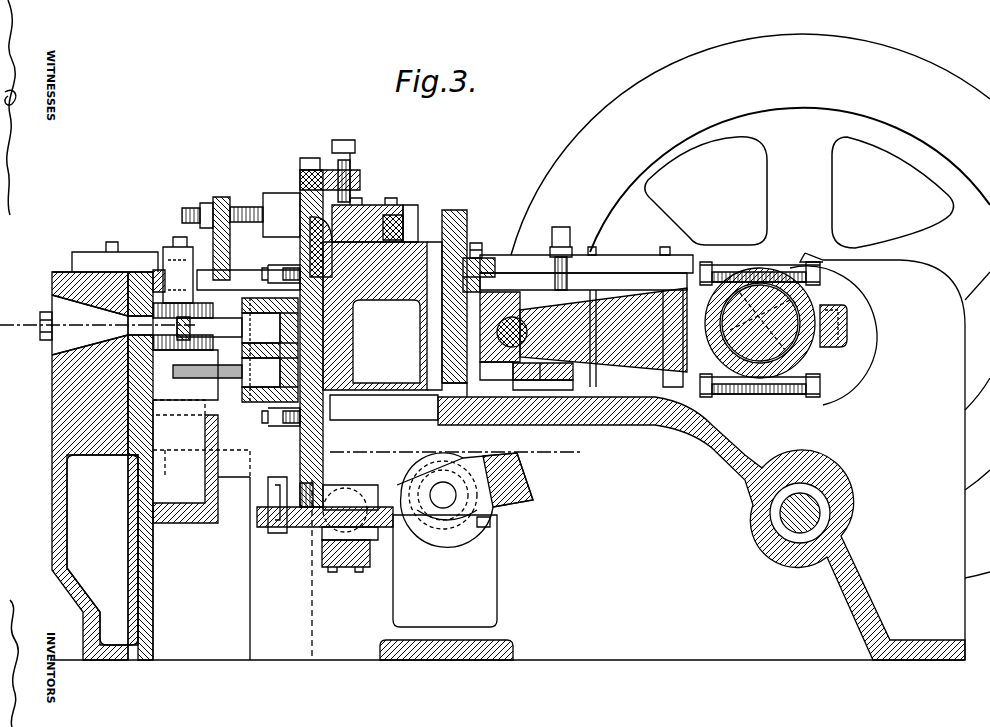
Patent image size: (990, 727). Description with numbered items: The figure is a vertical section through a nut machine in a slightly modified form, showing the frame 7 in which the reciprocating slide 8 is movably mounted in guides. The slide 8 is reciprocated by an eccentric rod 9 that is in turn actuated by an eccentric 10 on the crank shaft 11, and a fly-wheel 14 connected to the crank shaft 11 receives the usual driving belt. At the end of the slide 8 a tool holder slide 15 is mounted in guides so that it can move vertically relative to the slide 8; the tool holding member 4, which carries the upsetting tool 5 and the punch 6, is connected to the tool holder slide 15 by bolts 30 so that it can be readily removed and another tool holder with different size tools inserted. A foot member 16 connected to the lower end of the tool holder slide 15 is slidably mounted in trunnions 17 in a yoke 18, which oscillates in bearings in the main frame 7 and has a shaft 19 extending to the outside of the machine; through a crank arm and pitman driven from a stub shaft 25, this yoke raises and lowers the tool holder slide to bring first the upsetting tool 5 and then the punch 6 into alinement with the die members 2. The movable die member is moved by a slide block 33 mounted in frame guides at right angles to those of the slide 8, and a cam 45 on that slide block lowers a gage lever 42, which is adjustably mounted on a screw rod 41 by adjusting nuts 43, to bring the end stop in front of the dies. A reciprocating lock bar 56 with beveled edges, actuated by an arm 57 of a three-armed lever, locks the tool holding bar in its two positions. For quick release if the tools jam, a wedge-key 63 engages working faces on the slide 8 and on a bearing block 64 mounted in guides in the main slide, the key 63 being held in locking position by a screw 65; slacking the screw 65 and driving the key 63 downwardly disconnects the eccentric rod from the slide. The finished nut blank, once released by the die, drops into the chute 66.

The die members 2 is at (172, 345).
The tool holding member 4 is at (276, 312).
The upsetting tool 5 is at (222, 328).
The punch 6 is at (200, 372).
The frame 7 is at (680, 428).
The reciprocating slide 8 is at (404, 290).
The eccentric rod 9 is at (748, 285).
The eccentric 10 is at (775, 300).
The crank shaft 11 is at (848, 303).
The fly-wheel 14 is at (750, 306).
The tool holder slide 15 is at (343, 462).
The foot member 16 is at (288, 526).
The trunnions 17 is at (352, 500).
The yoke 18 is at (410, 492).
The shaft 19 is at (450, 527).
The stub shaft 25 is at (800, 535).
The bolts 30 is at (290, 275).
The slide block 33 is at (155, 278).
The screw rod 41 is at (192, 212).
The gage lever 42 is at (226, 232).
The adjusting nuts 43 is at (222, 205).
The cam 45 is at (203, 240).
The lock bar 56 is at (392, 198).
The arm 57 is at (412, 210).
The wedge-key 63 is at (447, 345).
The bearing block 64 is at (540, 300).
The screw 65 is at (478, 257).
The chute 66 is at (192, 497).